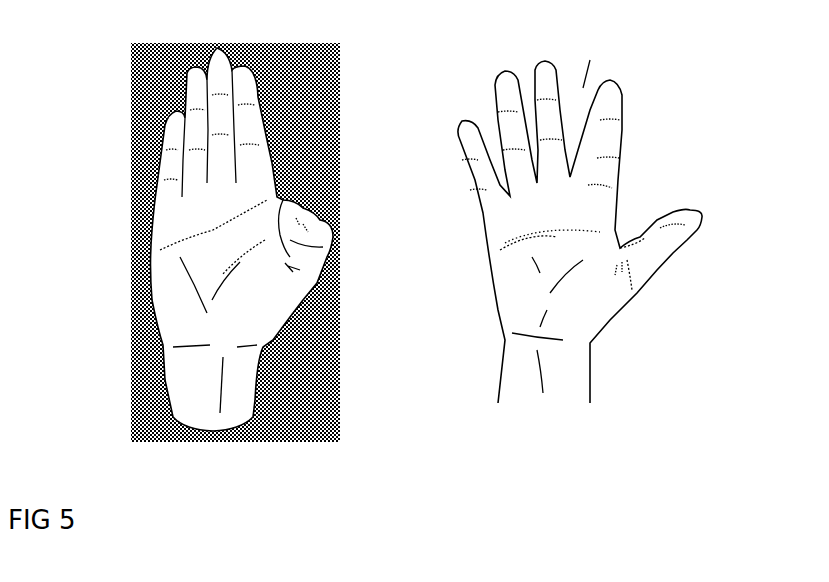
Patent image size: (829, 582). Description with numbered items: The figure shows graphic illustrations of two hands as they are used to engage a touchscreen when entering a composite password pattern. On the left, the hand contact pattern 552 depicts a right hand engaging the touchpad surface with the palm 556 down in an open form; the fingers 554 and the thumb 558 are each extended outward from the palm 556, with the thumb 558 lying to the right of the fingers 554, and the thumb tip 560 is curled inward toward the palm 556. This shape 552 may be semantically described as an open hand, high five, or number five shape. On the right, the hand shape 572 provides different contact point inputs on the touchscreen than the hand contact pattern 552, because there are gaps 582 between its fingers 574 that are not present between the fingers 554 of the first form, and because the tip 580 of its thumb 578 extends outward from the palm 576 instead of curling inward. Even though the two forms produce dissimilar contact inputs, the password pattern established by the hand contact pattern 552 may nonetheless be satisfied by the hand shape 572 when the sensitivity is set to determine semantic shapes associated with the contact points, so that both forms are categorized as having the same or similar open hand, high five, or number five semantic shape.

The hand contact pattern 552 is at (158, 313).
The fingers 554 is at (195, 90).
The palm 556 is at (185, 225).
The thumb 558 is at (310, 257).
The thumb tip 560 is at (288, 213).
The hand shape 572 is at (498, 320).
The fingers 574 is at (510, 88).
The palm 576 is at (520, 268).
The thumb 578 is at (645, 258).
The thumb tip 580 is at (687, 222).
The gaps 582 is at (580, 97).